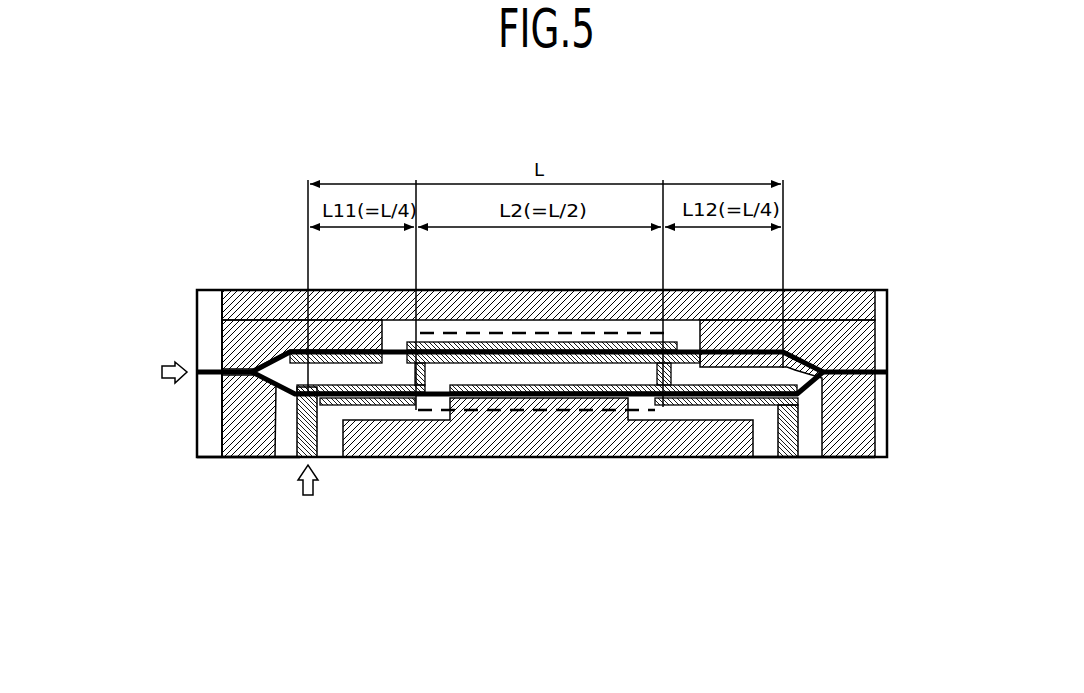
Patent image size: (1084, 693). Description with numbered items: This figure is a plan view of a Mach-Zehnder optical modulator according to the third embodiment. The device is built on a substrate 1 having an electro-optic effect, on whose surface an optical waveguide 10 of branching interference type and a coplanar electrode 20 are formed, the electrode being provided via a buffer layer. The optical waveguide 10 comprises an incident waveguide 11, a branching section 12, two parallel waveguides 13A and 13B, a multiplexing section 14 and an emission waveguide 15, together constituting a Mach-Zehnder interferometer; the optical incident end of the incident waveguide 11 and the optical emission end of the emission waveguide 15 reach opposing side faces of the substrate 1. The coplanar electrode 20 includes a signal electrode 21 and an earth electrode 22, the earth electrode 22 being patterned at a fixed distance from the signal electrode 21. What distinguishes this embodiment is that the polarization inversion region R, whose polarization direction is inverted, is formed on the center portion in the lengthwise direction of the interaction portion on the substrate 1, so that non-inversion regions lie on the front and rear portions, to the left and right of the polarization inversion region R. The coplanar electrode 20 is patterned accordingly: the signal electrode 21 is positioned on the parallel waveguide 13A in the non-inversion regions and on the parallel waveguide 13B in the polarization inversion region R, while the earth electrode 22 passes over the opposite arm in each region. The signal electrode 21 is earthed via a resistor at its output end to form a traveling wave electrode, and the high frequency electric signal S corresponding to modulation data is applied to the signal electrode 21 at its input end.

The substrate 1 is at (887, 320).
The optical waveguide 10 is at (213, 384).
The incident waveguide 11 is at (205, 368).
The branching section 12 is at (256, 368).
The parallel waveguide 13A is at (360, 402).
The parallel waveguide 13B is at (372, 350).
The multiplexing section 14 is at (832, 364).
The emission waveguide 15 is at (887, 375).
The coplanar electrode 20 is at (235, 460).
The signal electrode 21 is at (287, 457).
The earth electrode 22 is at (725, 443).
The polarization inversion region R is at (603, 412).
The high frequency electric signal S is at (308, 489).